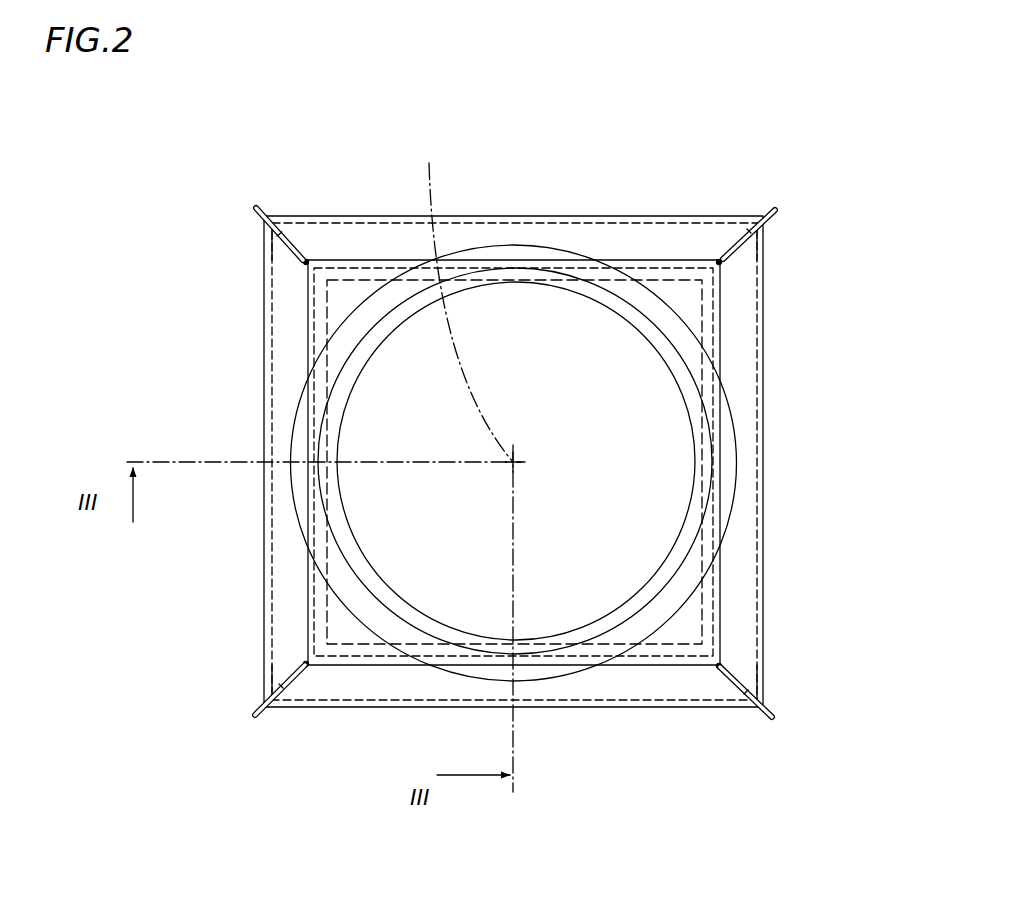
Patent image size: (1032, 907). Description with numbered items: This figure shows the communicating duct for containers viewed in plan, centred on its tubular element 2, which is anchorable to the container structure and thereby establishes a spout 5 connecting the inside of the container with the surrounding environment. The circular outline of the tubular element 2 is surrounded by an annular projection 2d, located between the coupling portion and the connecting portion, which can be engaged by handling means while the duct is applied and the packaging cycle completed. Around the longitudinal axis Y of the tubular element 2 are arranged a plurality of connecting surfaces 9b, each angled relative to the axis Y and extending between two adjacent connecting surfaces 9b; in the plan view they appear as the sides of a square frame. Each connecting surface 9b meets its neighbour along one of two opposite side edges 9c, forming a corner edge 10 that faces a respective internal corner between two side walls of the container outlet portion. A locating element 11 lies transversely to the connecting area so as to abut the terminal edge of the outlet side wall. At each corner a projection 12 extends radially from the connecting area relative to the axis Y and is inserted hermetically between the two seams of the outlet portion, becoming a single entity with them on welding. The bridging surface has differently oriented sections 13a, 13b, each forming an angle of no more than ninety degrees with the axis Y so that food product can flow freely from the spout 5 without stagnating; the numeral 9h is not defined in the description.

The tubular element 2 is at (680, 337).
The annular projection 2d is at (507, 253).
The spout 5 is at (683, 406).
The connecting surface 9b is at (580, 236).
The side edge 9c is at (316, 243).
The frame bottom side 9h is at (545, 690).
The corner edge 10 is at (717, 260).
The locating element 11 is at (370, 257).
The projection 12 is at (255, 208).
The section of bridging surface 13a is at (288, 396).
The section of bridging surface 13b is at (266, 578).
The longitudinal axis Y is at (467, 300).